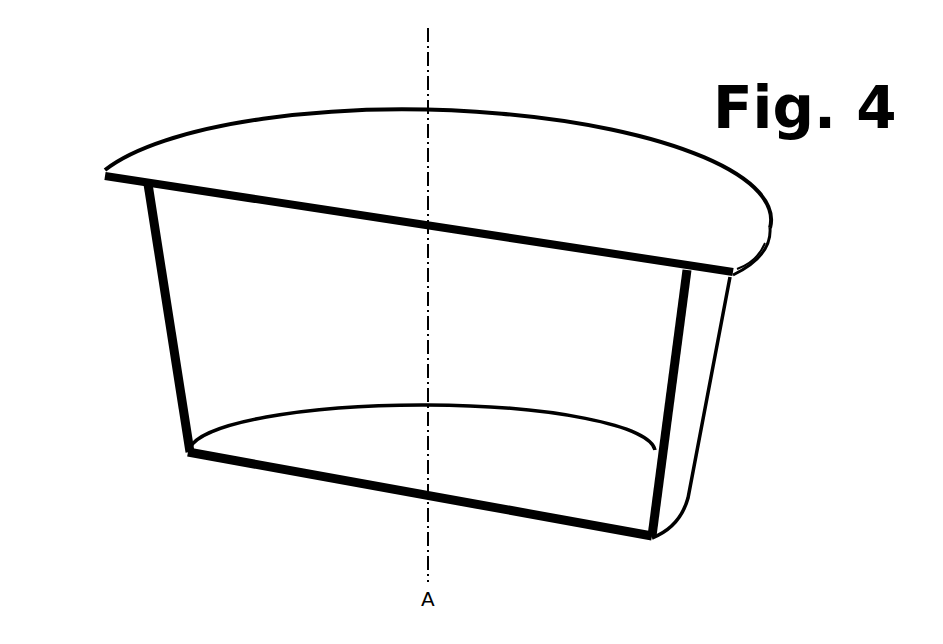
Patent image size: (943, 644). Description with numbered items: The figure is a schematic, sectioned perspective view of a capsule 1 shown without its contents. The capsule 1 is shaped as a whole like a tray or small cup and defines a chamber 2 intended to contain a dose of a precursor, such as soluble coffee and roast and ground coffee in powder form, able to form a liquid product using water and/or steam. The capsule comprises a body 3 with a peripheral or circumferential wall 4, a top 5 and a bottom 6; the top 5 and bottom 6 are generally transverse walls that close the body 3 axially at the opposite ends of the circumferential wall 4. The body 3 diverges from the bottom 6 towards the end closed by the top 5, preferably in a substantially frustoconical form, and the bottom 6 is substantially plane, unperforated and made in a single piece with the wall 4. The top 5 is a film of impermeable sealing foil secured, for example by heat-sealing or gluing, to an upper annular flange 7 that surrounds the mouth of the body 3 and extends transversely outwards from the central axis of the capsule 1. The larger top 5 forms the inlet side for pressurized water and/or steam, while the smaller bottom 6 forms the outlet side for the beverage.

The capsule 1 is at (449, 296).
The chamber 2 is at (270, 240).
The body 3 is at (722, 376).
The circumferential wall 4 is at (176, 380).
The top 5 is at (562, 132).
The bottom 6 is at (285, 478).
The upper annular flange 7 is at (718, 284).